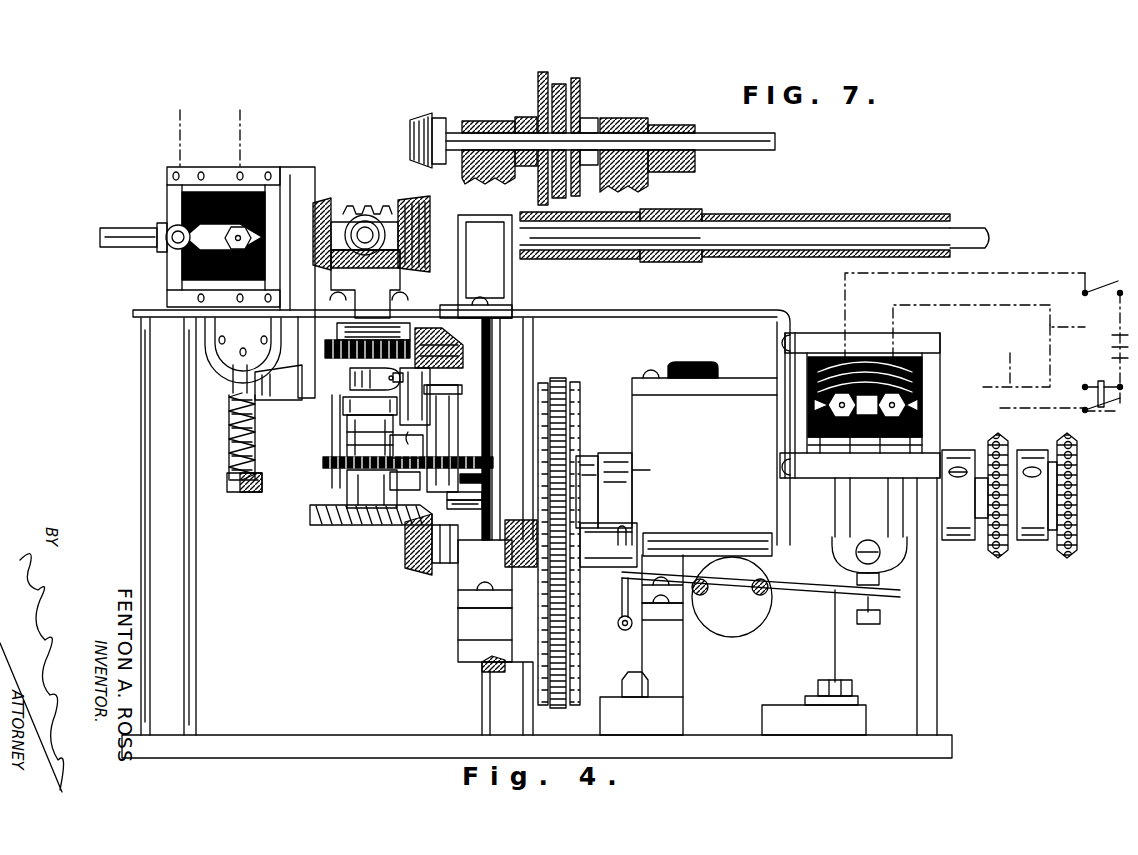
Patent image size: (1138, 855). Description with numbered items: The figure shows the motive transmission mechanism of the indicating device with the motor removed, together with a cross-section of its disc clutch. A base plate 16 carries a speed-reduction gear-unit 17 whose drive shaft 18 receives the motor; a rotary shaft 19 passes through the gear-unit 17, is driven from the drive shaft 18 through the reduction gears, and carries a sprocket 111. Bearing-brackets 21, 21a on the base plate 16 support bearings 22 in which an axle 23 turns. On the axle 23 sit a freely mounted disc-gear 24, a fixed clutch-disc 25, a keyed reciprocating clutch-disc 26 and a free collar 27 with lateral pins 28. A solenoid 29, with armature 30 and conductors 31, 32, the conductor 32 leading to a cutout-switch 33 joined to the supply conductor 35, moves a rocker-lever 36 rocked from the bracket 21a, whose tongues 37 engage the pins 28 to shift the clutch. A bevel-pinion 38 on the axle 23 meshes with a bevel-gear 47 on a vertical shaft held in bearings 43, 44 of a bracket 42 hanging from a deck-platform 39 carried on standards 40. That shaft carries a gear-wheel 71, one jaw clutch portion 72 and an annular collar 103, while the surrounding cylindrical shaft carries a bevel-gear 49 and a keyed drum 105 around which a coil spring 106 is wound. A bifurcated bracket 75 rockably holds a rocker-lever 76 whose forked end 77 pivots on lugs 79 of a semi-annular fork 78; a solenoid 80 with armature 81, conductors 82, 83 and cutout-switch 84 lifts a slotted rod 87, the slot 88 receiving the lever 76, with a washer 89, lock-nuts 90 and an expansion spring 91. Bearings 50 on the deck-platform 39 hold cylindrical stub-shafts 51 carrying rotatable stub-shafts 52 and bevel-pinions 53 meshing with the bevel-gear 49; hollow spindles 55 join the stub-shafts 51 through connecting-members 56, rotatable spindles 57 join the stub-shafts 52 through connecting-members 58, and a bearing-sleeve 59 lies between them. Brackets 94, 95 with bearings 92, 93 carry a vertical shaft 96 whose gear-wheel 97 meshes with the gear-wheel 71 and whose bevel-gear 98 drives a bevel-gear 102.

In FIG. 4, the base plate 16 is at (955, 748).
In FIG. 4, the speed-reduction gear-unit 17 is at (704, 453).
In FIG. 4, the drive shaft 18 is at (441, 542).
In FIG. 4, the rotary shaft 19 is at (986, 452).
In FIG. 4, the bearing-bracket 21 is at (470, 648).
In FIG. 4, the bearing-bracket 21a is at (672, 666).
In FIG. 7, the bearings 22 is at (484, 121).
In FIG. 4, the bearings 22 is at (482, 612).
In FIG. 7, the axle 23 is at (776, 143).
In FIG. 4, the axle 23 is at (738, 532).
In FIG. 7, the disc-gear 24 is at (559, 82).
In FIG. 4, the disc-gear 24 is at (560, 378).
In FIG. 7, the clutch-disc 25 is at (543, 70).
In FIG. 4, the clutch-disc 25 is at (542, 382).
In FIG. 7, the clutch-disc 26 is at (578, 78).
In FIG. 4, the clutch-disc 26 is at (580, 390).
In FIG. 7, the collar 27 is at (612, 118).
In FIG. 4, the collar 27 is at (612, 575).
In FIG. 4, the pins 28 is at (640, 545).
In FIG. 4, the solenoid 29 is at (926, 378).
In FIG. 4, the armature 30 is at (862, 498).
In FIG. 4, the conductor 31 is at (897, 322).
In FIG. 4, the conductor 32 is at (842, 300).
In FIG. 4, the cutout-switch 33 is at (1100, 290).
In FIG. 4, the supply conductor 35 is at (1125, 353).
In FIG. 4, the rocker-lever 36 is at (812, 587).
In FIG. 4, the tongues 37 is at (627, 540).
In FIG. 7, the bevel-pinion 38 is at (421, 113).
In FIG. 4, the bevel-pinion 38 is at (408, 552).
In FIG. 4, the deck-platform 39 is at (133, 317).
In FIG. 4, the standards 40 is at (337, 526).
In FIG. 4, the bracket 42 is at (346, 427).
In FIG. 4, the bearing 43 is at (347, 446).
In FIG. 4, the bearing 44 is at (352, 490).
In FIG. 4, the bevel-gear 47 is at (322, 516).
In FIG. 4, the bevel-gear 49 is at (440, 282).
In FIG. 4, the bearings 50 is at (492, 292).
In FIG. 4, the cylindrical stub-shaft 51 is at (150, 227).
In FIG. 4, the rotatable stub-shaft 52 is at (375, 214).
In FIG. 4, the bevel-pinion 53 is at (318, 203).
In FIG. 4, the hollow spindle 55 is at (918, 216).
In FIG. 4, the cylindrical connecting-member 56 is at (731, 214).
In FIG. 4, the rotatable spindle 57 is at (987, 226).
In FIG. 4, the cylindrical connecting-member 58 is at (667, 225).
In FIG. 4, the bearing-sleeve 59 is at (775, 258).
In FIG. 4, the gear-wheel 71 is at (345, 468).
In FIG. 4, the jaw clutch portion 72 is at (343, 407).
In FIG. 4, the bifurcated bracket 75 is at (298, 282).
In FIG. 4, the rocker-lever 76 is at (278, 382).
In FIG. 4, the forked end 77 is at (375, 379).
In FIG. 4, the semi-annular fork 78 is at (415, 396).
In FIG. 4, the lugs 79 is at (402, 375).
In FIG. 4, the solenoid 80 is at (213, 195).
In FIG. 4, the armature 81 is at (243, 355).
In FIG. 4, the conductor 82 is at (178, 118).
In FIG. 4, the conductor 83 is at (242, 120).
In FIG. 4, the cutout-switch 84 is at (1101, 412).
In FIG. 4, the rod 87 is at (229, 462).
In FIG. 4, the slot 88 is at (231, 410).
In FIG. 4, the washer 89 is at (228, 488).
In FIG. 4, the lock-nuts 90 is at (241, 492).
In FIG. 4, the expansion spring 91 is at (229, 432).
In FIG. 4, the bearing 92 is at (470, 480).
In FIG. 4, the bearing 93 is at (450, 430).
In FIG. 4, the bracket 94 is at (412, 482).
In FIG. 4, the bracket 95 is at (406, 445).
In FIG. 4, the vertical shaft 96 is at (470, 503).
In FIG. 4, the gear-wheel 97 is at (484, 464).
In FIG. 4, the bevel-gear 98 is at (486, 360).
In FIG. 4, the bevel-gear 102 is at (434, 345).
In FIG. 4, the annular collar 103 is at (367, 342).
In FIG. 4, the cylindrical drum 105 is at (365, 284).
In FIG. 4, the coil spring 106 is at (350, 318).
In FIG. 4, the sprocket 111 is at (1070, 556).